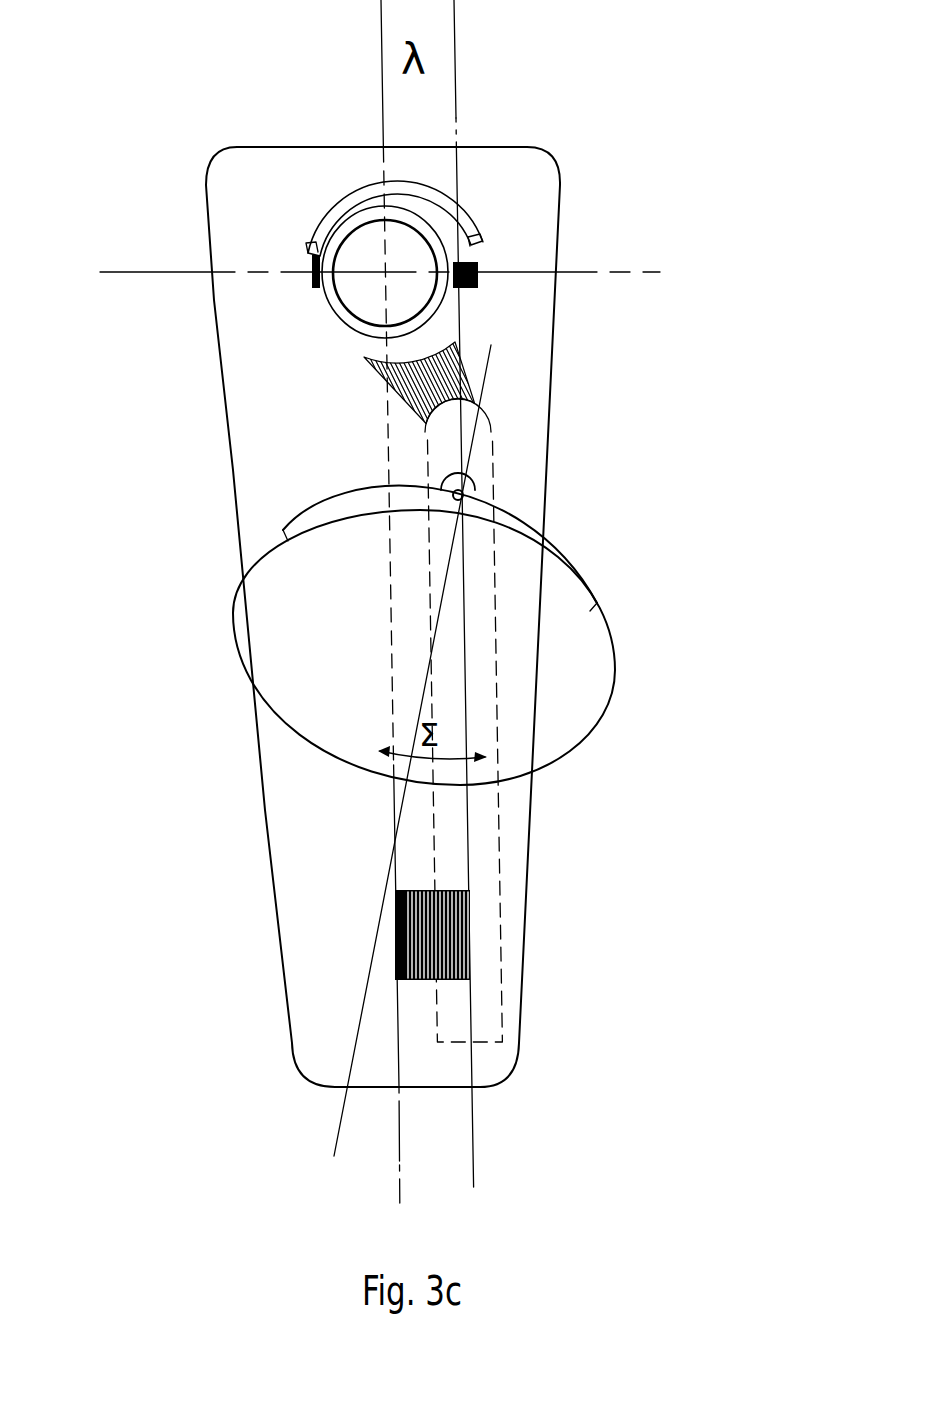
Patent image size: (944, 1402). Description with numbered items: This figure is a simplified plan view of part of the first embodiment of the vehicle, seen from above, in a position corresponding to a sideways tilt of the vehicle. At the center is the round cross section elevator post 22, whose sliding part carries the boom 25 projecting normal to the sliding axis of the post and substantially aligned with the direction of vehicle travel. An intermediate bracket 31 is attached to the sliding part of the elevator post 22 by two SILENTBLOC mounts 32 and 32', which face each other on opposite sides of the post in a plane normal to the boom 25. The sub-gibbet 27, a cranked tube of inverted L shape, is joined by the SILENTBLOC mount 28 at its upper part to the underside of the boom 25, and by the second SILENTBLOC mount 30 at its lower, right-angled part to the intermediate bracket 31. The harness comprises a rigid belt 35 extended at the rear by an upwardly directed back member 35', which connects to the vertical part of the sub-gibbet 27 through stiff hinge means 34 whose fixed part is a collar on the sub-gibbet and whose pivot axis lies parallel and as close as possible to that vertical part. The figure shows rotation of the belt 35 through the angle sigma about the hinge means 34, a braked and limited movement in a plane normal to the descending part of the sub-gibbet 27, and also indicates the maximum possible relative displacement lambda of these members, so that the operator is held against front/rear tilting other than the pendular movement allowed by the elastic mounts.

The elevator post 22 is at (368, 248).
The boom 25 is at (340, 878).
The sub-gibbet 27 is at (483, 840).
The SILENTBLOC mount 28 is at (455, 947).
The SILENTBLOC mount 30 is at (480, 387).
The intermediate bracket 31 is at (467, 313).
The SILENTBLOC mount 32 is at (175, 220).
The SILENTBLOC mount 32' is at (563, 209).
The stiff hinge means 34 is at (467, 490).
The rigid belt 35 is at (491, 647).
The back member 35' is at (530, 548).